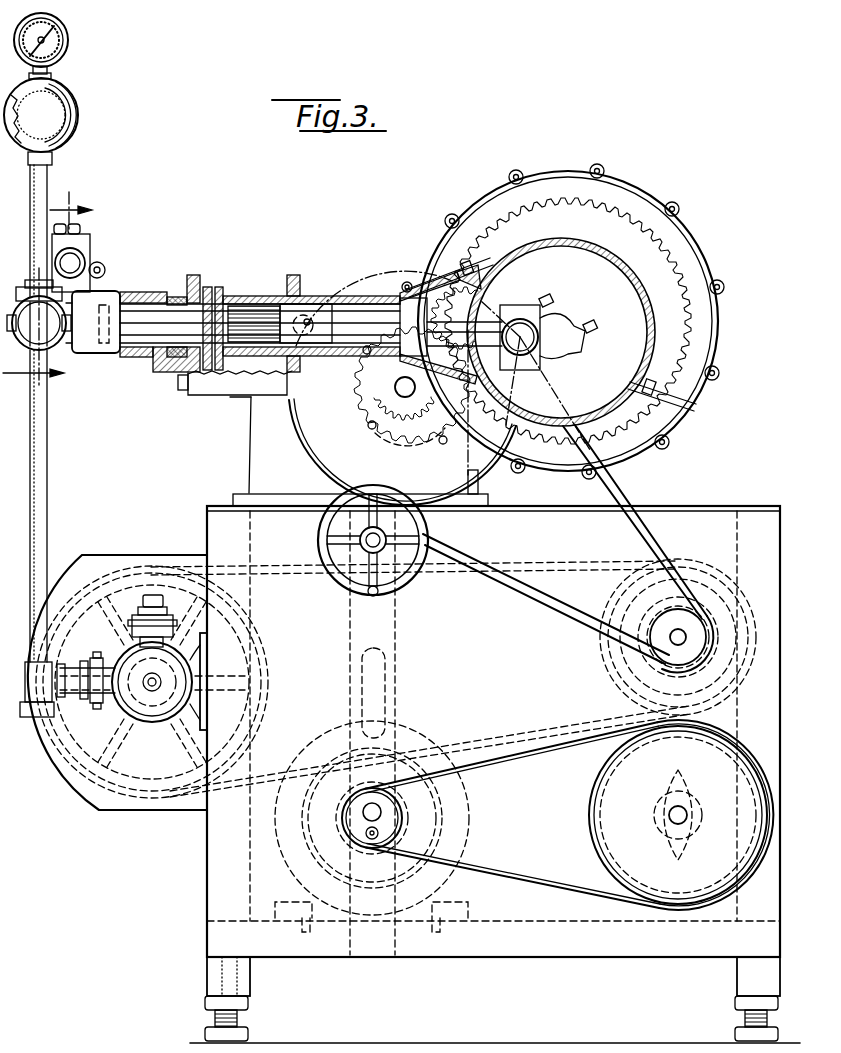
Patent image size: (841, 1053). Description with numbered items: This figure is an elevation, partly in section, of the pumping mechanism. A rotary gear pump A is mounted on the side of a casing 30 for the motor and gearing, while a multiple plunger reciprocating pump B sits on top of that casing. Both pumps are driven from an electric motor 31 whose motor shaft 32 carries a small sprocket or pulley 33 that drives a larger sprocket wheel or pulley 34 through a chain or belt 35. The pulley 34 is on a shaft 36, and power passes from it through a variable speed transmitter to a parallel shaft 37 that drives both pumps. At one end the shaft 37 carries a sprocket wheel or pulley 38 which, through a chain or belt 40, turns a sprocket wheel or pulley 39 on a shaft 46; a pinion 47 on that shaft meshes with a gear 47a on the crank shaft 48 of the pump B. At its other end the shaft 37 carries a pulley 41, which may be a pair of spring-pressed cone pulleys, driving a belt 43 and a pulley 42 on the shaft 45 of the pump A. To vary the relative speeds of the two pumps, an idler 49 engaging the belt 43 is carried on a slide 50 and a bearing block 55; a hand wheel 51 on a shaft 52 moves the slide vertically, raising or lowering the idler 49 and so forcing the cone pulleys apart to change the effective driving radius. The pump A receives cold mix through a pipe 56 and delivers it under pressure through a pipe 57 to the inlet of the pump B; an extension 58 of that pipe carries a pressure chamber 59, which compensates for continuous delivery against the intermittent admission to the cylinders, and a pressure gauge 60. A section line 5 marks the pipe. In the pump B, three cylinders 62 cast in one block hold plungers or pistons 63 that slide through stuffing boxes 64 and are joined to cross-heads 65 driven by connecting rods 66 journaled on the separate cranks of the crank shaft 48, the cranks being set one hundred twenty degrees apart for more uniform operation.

The section line 5- 5 is at (47, 286).
The casing 30 is at (207, 848).
The electric motor 31 is at (327, 730).
The motor shaft 32 is at (381, 811).
The sprocket or pulley 33 is at (382, 833).
The sprocket wheel or pulley 34 is at (596, 769).
The chain or belt 35 is at (518, 876).
The shaft 36 is at (672, 816).
The shaft 37 is at (670, 632).
The sprocket wheel or pulley 38 is at (677, 652).
The sprocket wheel or pulley 39 is at (312, 448).
The chain or belt 40 is at (621, 488).
The pulley 41 is at (738, 604).
The pulley 42 is at (112, 583).
The belt 43 is at (262, 576).
The shaft 45 is at (143, 690).
The shaft 46 is at (400, 390).
The pinion 47 is at (358, 375).
The gear 47a is at (662, 262).
The crank shaft 48 is at (565, 323).
The idler 49 is at (305, 812).
The slide 50 is at (350, 628).
The hand wheel 51 is at (330, 529).
The shaft 52 is at (362, 544).
The bearing block 55 is at (353, 845).
The pipe 56 is at (152, 595).
The pipe 57 is at (44, 432).
The extension 58 is at (49, 180).
The pressure chamber 59 is at (63, 105).
The pressure gauge 60 is at (69, 40).
The cylinders 62 is at (145, 292).
The plungers or pistons 63 is at (236, 312).
The stuffing boxes 64 is at (176, 296).
The cross-heads 65 is at (303, 308).
The connecting rods 66 is at (460, 314).
The pump A is at (150, 726).
The pump B is at (128, 294).